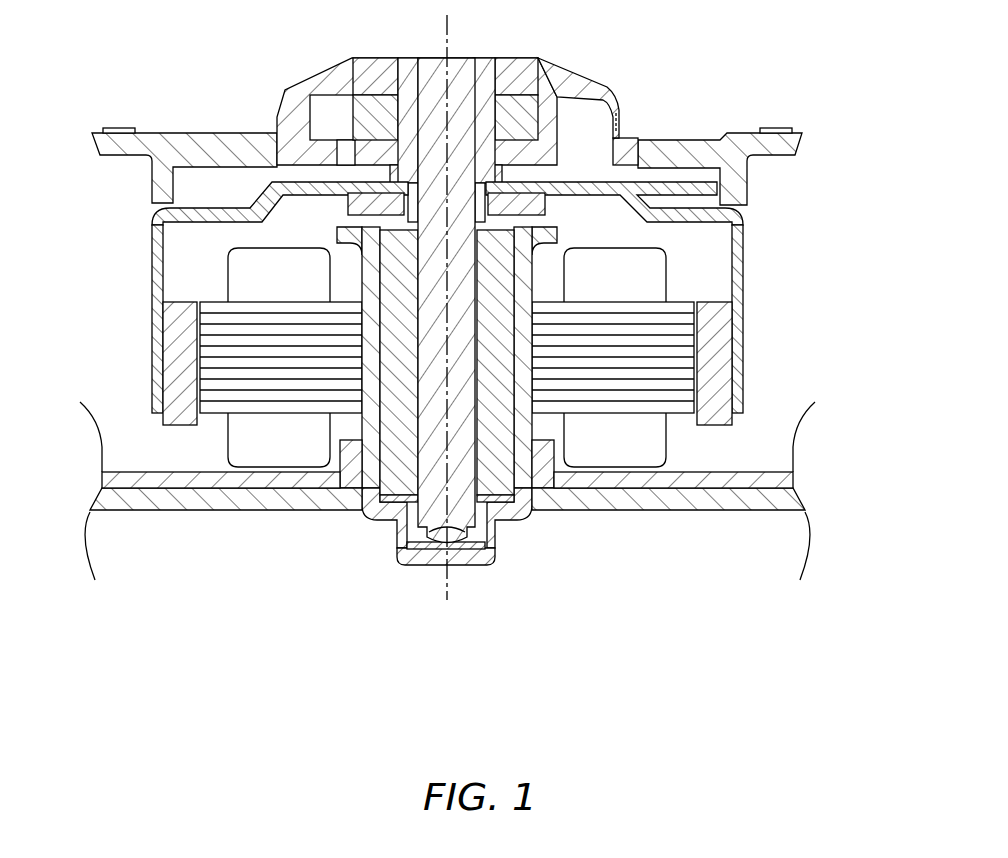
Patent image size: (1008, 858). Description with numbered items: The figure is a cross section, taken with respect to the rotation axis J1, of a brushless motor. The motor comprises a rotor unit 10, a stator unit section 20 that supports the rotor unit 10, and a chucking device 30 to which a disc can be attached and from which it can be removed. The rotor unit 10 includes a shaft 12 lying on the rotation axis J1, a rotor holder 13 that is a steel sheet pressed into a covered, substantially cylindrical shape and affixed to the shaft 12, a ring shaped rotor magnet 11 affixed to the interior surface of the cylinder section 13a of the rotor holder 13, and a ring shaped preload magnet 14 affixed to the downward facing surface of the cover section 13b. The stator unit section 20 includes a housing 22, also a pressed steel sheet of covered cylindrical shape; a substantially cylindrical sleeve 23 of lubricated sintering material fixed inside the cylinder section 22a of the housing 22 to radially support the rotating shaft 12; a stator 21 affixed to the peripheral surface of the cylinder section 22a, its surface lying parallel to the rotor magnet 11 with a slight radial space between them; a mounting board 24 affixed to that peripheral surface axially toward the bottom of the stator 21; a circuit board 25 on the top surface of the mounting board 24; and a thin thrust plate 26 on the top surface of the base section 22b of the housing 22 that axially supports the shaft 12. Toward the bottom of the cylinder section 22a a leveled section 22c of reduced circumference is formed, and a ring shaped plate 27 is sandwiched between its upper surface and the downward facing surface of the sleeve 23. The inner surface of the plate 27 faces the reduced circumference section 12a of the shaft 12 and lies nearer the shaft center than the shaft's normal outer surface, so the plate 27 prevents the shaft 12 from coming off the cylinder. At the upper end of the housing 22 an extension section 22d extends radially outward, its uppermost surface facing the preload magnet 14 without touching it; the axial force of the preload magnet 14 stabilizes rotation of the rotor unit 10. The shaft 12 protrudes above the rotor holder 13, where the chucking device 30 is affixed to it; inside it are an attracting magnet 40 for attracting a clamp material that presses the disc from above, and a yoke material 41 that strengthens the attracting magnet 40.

The rotor unit 10 is at (451, 232).
The rotor magnet 11 is at (371, 429).
The shaft 12 is at (450, 315).
The reduced circumference section 12a is at (460, 515).
The rotor holder 13 is at (452, 232).
The cylinder section 13a is at (160, 362).
The cover section 13b is at (627, 202).
The preload magnet 14 is at (347, 212).
The stator unit section 20 is at (451, 495).
The stator 21 is at (297, 440).
The housing 22 is at (560, 416).
The cylinder section 22a is at (522, 422).
The base section 22b is at (427, 562).
The leveled section 22c is at (393, 510).
The extension section 22d is at (547, 235).
The sleeve 23 is at (405, 447).
The mounting board 24 is at (667, 500).
The circuit board 25 is at (740, 480).
The thrust plate 26 is at (465, 549).
The plate 27 is at (492, 506).
The chucking device 30 is at (199, 120).
The attracting magnet 40 is at (491, 82).
The yoke material 41 is at (557, 130).
The rotation axis J1 is at (447, 30).